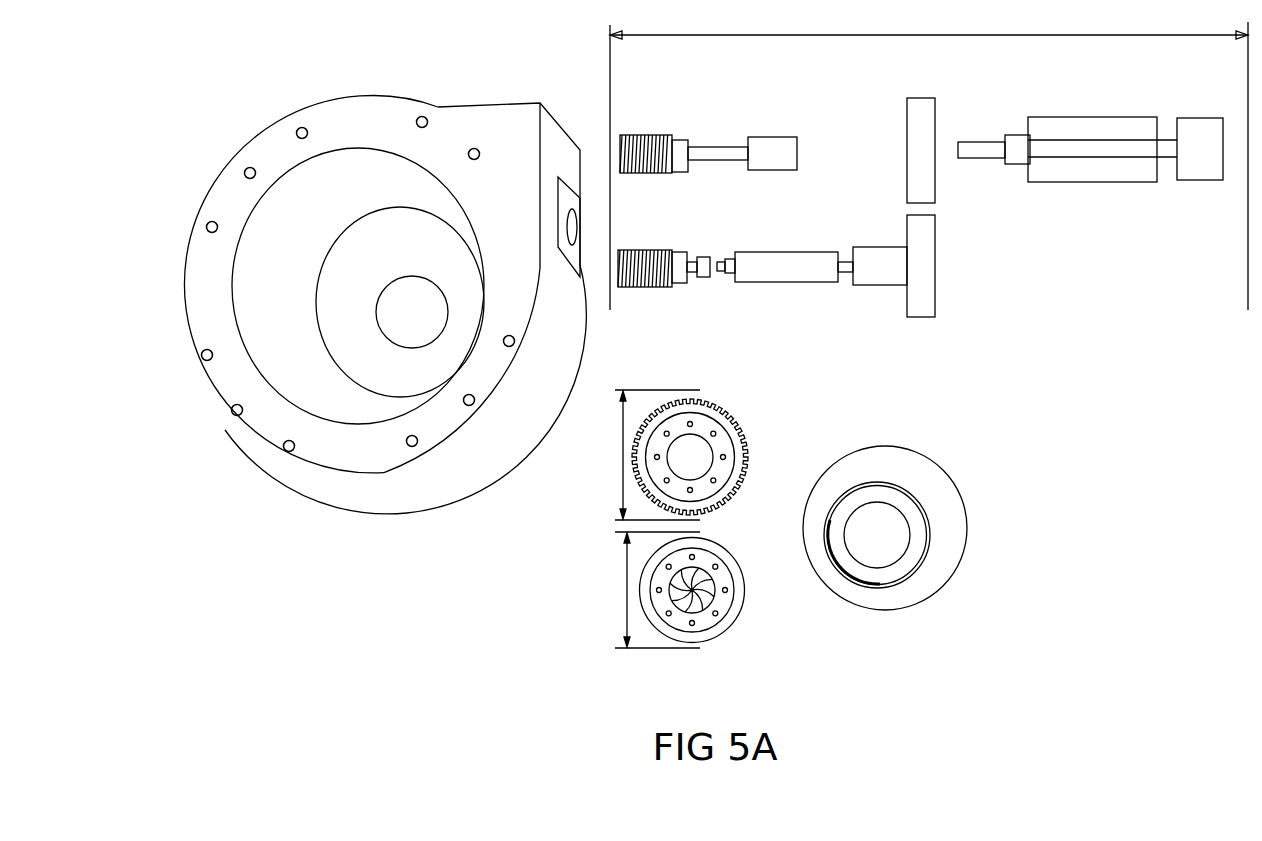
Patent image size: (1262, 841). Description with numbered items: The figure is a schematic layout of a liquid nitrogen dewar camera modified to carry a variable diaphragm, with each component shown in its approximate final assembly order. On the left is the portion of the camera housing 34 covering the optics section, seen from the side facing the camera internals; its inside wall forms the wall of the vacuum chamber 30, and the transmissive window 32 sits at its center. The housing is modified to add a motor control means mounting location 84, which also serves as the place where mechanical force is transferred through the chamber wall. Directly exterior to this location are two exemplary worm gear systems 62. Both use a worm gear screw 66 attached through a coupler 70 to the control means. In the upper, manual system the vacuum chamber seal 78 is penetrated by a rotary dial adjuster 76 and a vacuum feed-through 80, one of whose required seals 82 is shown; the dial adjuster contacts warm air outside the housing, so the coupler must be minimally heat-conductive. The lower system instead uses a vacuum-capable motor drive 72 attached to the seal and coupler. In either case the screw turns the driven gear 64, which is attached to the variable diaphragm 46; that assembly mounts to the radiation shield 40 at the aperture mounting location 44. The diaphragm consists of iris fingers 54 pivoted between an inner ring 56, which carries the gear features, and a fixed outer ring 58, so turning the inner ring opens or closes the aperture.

The vacuum chamber 30 is at (264, 310).
The transmissive window 32 is at (398, 325).
The camera housing 34 is at (460, 457).
The motor control means mounting location 84 is at (577, 200).
The worm gear system 62 is at (929, 155).
The worm gear screw 66 is at (625, 177).
The coupler 70 is at (790, 170).
The motor drive 72 is at (883, 247).
The vacuum chamber seal 78 is at (935, 165).
The seal 82 is at (1037, 163).
The vacuum feed-through 80 is at (1065, 182).
The rotary dial adjuster 76 is at (1217, 180).
The driven gear 64 is at (668, 455).
The variable diaphragm 46 is at (696, 590).
The iris fingers 54 is at (700, 568).
The inner ring 56 is at (730, 585).
The outer ring 58 is at (738, 608).
The aperture mounting location 44 is at (873, 495).
The radiation shield 40 is at (957, 552).